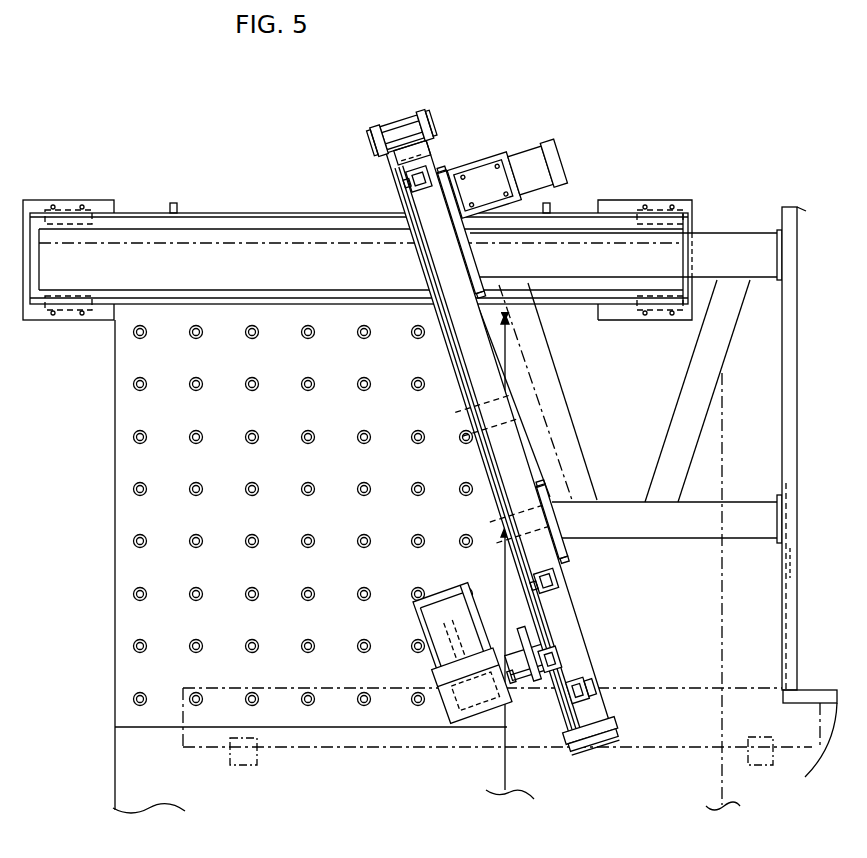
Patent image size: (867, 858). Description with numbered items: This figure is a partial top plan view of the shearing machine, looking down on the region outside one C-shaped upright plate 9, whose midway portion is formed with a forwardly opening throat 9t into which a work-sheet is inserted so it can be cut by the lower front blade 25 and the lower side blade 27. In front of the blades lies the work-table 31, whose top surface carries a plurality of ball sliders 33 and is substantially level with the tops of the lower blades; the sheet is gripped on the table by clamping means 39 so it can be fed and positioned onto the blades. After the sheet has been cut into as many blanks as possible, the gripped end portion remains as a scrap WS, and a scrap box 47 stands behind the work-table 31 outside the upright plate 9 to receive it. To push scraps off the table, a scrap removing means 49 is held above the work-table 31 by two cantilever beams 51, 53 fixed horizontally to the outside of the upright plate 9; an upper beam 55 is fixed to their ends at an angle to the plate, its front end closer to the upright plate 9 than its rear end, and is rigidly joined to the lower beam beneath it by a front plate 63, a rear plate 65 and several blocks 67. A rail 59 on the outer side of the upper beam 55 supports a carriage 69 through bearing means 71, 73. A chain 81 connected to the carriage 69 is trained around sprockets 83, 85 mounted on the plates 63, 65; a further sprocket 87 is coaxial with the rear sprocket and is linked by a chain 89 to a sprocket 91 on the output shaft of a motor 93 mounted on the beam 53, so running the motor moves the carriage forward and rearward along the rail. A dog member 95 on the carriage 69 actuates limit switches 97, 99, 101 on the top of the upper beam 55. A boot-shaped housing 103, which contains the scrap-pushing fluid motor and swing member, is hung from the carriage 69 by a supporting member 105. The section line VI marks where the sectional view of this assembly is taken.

The upright plate 9 is at (782, 404).
The throat 9t is at (790, 484).
The lower front blade 25 is at (805, 704).
The lower side blade 27 is at (790, 562).
The work-table 31 is at (115, 510).
The ball sliders 33 is at (134, 543).
The clamping means 39 is at (230, 763).
The scrap box 47 is at (209, 213).
The scrap removing means 49 is at (403, 108).
The beam 51 is at (709, 530).
The beam 53 is at (718, 267).
The upper beam 55 is at (477, 389).
The rail 59 is at (490, 453).
The plate 63 is at (612, 745).
The plate 65 is at (407, 170).
The blocks 67 is at (483, 418).
The carriage 69 is at (538, 697).
The bearing means 71 is at (578, 681).
The bearing means 73 is at (538, 638).
The chain 81 is at (441, 348).
The sprocket 83 is at (585, 756).
The sprocket 85 is at (374, 134).
The sprocket 87 is at (432, 128).
The chain 89 is at (456, 167).
The sprocket 91 is at (462, 178).
The motor 93 is at (527, 165).
The dog member 95 is at (558, 656).
The limit switch 97 is at (598, 690).
The limit switch 99 is at (556, 577).
The limit switch 101 is at (421, 187).
The housing 103 is at (414, 622).
The supporting member 105 is at (513, 682).
The scrap WS is at (330, 688).
The section line VI is at (244, 190).